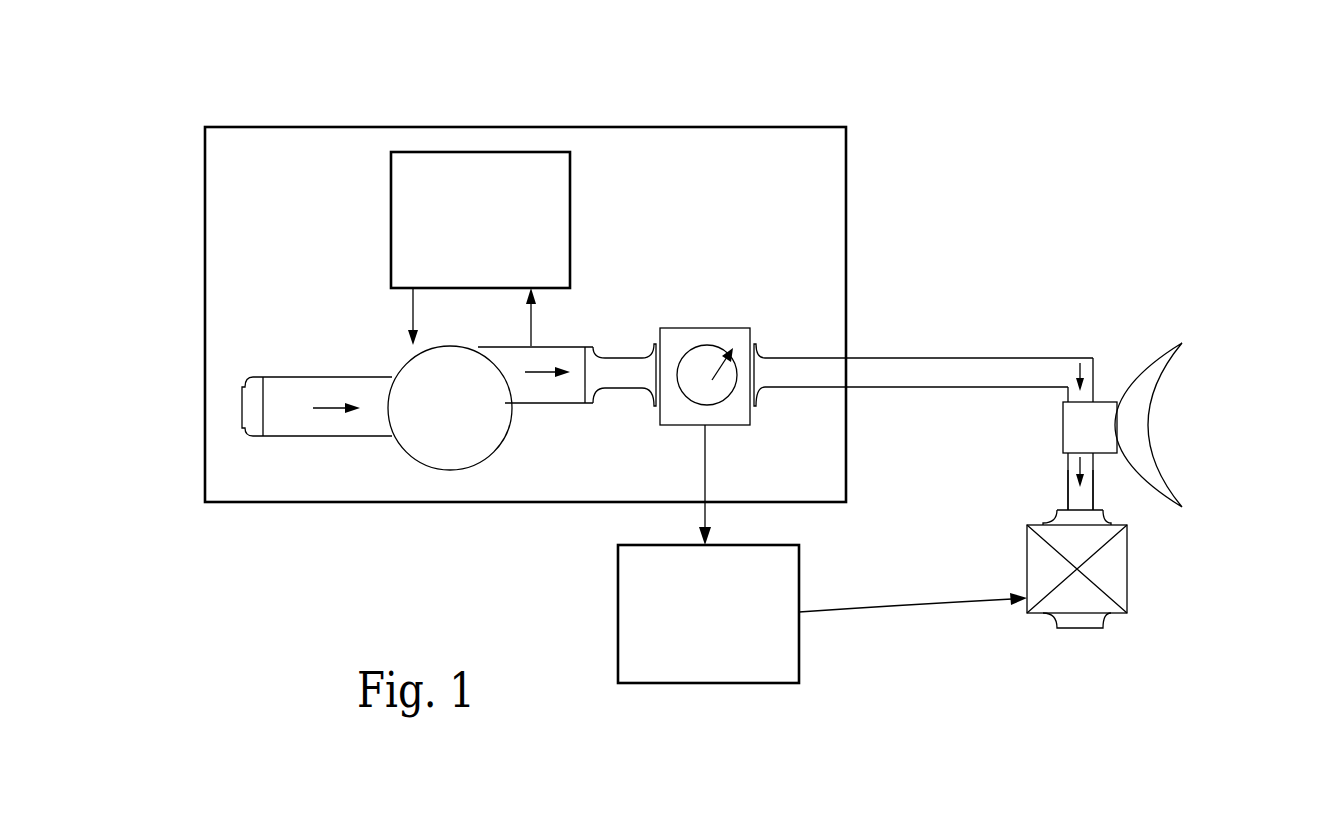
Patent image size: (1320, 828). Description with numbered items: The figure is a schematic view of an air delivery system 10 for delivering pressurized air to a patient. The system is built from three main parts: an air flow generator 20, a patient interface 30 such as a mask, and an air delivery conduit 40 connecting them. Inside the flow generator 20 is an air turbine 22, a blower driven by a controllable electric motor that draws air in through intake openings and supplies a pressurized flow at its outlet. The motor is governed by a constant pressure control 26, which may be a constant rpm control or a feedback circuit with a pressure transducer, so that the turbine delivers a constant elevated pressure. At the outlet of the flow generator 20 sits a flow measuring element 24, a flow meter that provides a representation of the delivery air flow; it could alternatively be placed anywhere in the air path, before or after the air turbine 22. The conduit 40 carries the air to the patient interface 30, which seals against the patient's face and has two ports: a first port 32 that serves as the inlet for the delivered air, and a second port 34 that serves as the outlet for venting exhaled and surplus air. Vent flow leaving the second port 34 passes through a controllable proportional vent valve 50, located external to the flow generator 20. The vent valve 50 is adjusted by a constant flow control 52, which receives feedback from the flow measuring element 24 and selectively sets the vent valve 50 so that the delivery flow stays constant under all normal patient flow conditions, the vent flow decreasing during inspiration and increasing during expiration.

The air delivery system 10 is at (943, 119).
The air flow generator 20 is at (636, 116).
The air turbine 22 is at (430, 432).
The flow measuring element 24 is at (740, 328).
The constant pressure control 26 is at (570, 200).
The patient interface 30 is at (1168, 414).
The first port 32 is at (1096, 372).
The second port 34 is at (1095, 492).
The air delivery conduit 40 is at (957, 352).
The vent valve 50 is at (1040, 567).
The constant flow control 52 is at (650, 683).